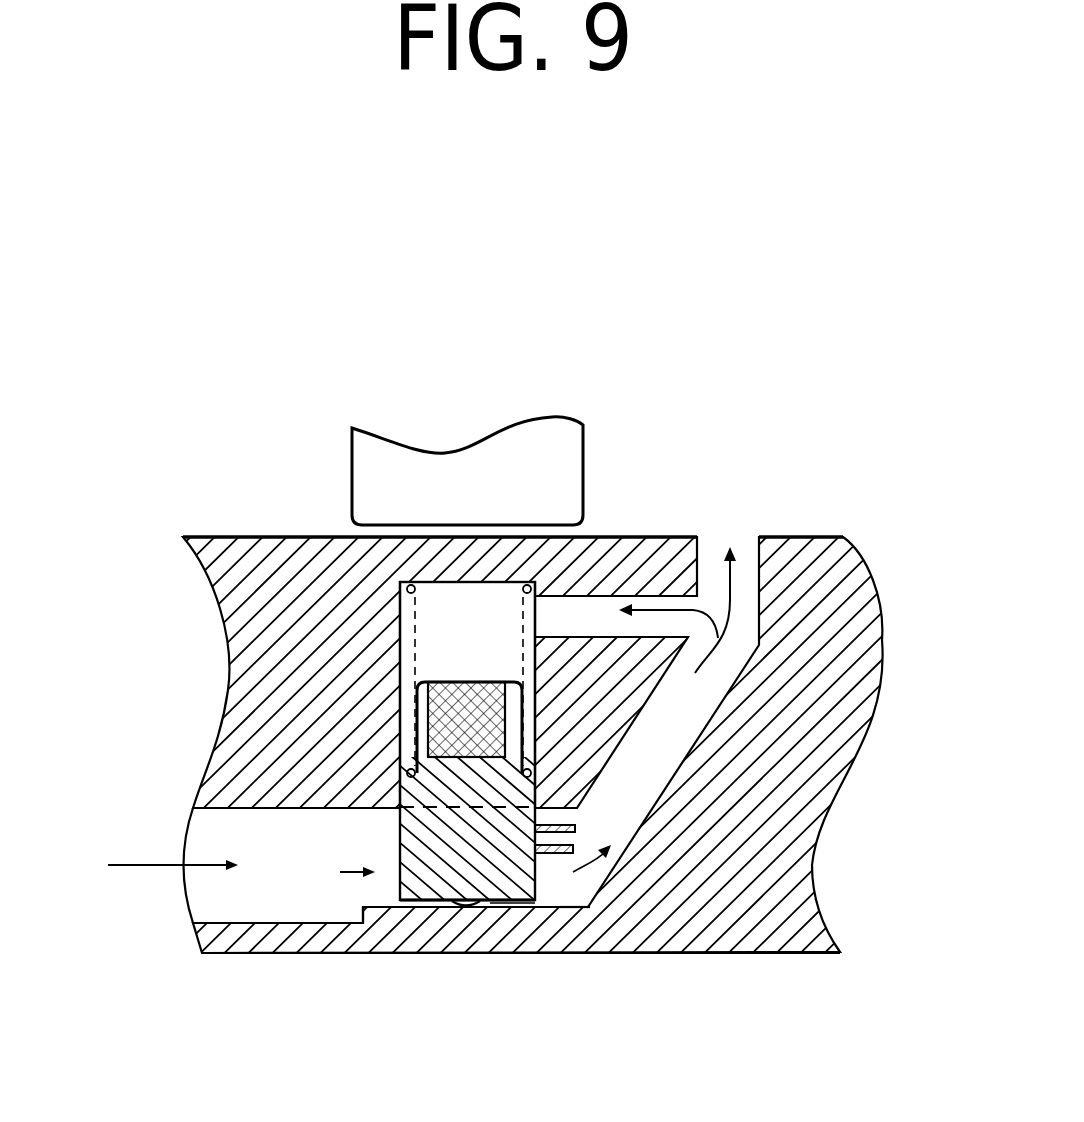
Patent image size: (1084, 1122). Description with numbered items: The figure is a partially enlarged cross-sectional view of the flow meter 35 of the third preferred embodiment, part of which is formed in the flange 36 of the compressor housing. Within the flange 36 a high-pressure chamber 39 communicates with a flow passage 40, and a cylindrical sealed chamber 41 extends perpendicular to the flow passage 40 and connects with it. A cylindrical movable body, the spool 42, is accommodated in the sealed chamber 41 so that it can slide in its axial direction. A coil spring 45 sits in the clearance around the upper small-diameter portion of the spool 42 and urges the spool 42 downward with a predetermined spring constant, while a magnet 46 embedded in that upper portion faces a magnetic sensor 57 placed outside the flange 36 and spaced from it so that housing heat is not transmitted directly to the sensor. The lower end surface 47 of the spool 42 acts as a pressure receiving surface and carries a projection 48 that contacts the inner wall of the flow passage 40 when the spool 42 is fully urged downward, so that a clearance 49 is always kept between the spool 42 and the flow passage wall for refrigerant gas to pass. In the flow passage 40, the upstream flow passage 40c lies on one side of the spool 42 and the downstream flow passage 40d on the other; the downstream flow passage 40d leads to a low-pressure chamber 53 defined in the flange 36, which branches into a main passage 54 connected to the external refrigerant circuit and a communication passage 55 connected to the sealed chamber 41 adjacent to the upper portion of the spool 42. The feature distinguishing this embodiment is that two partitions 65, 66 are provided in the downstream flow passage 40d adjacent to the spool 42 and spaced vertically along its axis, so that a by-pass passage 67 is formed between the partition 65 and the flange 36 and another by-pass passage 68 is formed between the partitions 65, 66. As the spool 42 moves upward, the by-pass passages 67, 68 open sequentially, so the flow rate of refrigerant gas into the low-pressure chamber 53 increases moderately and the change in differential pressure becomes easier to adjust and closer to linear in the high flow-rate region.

The flow meter 35 is at (255, 372).
The flange 36 is at (252, 582).
The high-pressure chamber 39 is at (213, 889).
The flow passage 40 is at (372, 888).
The upstream flow passage 40c is at (388, 880).
The downstream flow passage 40d is at (568, 887).
The sealed chamber 41 is at (451, 643).
The spool 42 is at (442, 877).
The coil spring 45 is at (397, 580).
The magnet 46 is at (485, 705).
The lower end surface 47 is at (427, 905).
The projection 48 is at (461, 906).
The clearance 49 is at (509, 903).
The low-pressure chamber 53 is at (707, 688).
The main passage 54 is at (748, 555).
The communication passage 55 is at (655, 600).
The magnetic sensor 57 is at (418, 472).
The partition 65 is at (575, 832).
The partition 66 is at (544, 857).
The by-pass passage 67 is at (563, 817).
The by-pass passage 68 is at (558, 855).